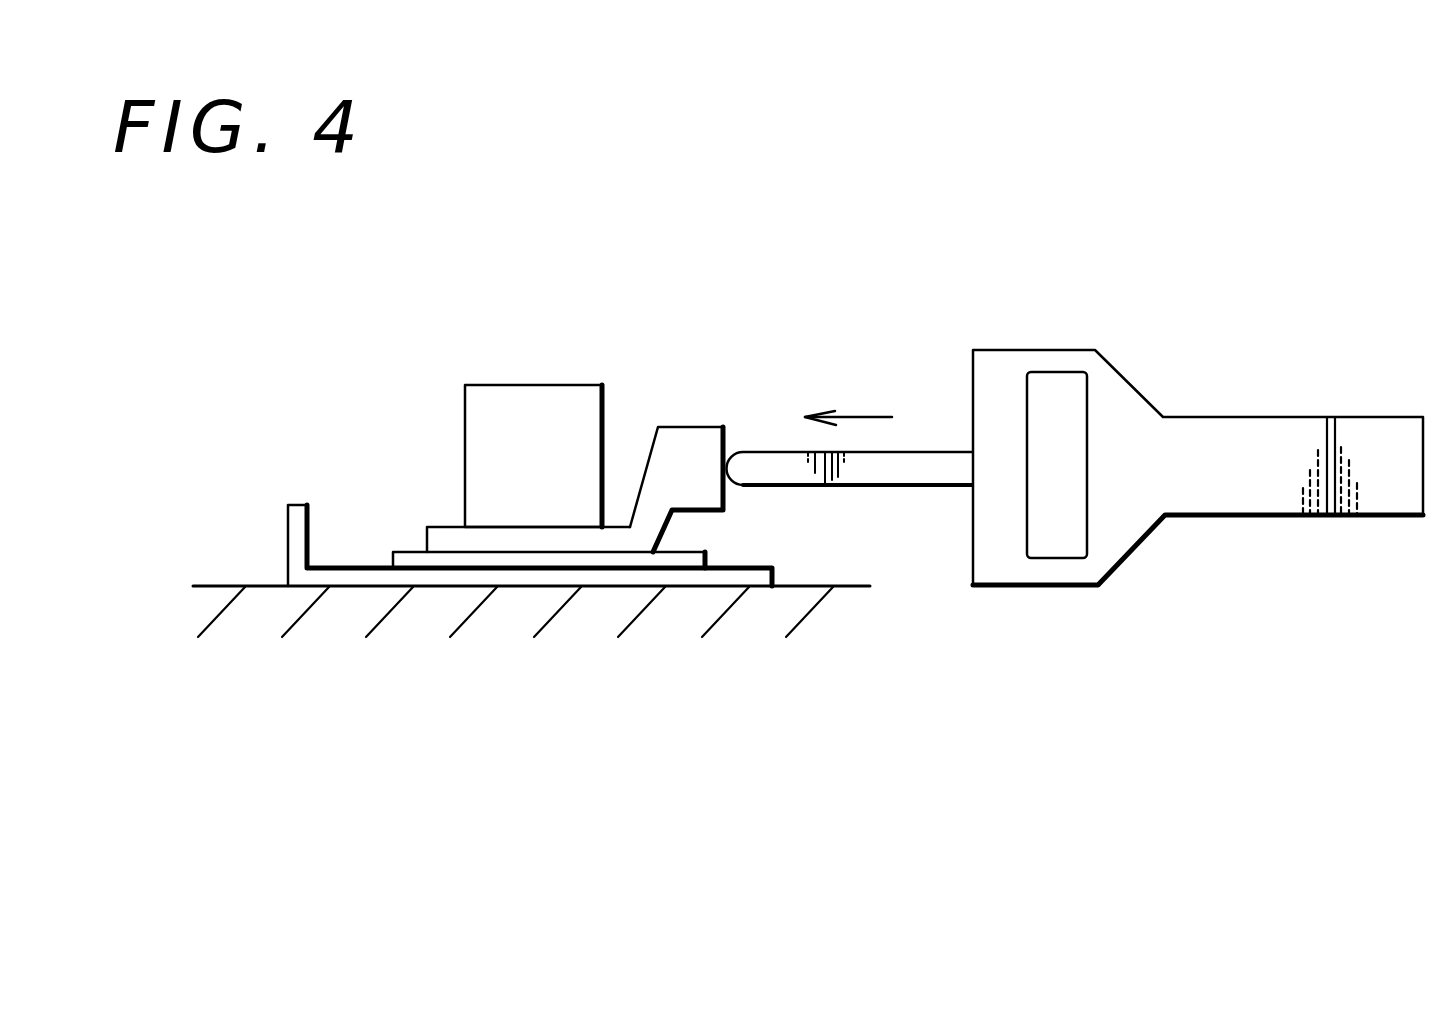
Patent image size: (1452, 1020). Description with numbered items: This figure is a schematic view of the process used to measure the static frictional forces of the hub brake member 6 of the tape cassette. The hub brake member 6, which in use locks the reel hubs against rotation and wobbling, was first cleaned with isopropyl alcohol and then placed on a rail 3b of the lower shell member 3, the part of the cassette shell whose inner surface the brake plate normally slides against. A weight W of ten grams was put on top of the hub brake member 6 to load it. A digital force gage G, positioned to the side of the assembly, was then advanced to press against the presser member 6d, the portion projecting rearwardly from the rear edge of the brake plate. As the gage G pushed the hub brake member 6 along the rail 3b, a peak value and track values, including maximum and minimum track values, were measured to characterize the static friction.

The lower shell member 3 is at (343, 577).
The rail 3b is at (520, 560).
The hub brake member 6 is at (575, 496).
The presser member 6d is at (692, 443).
The workpiece W is at (533, 456).
The digital force gage G is at (1123, 408).